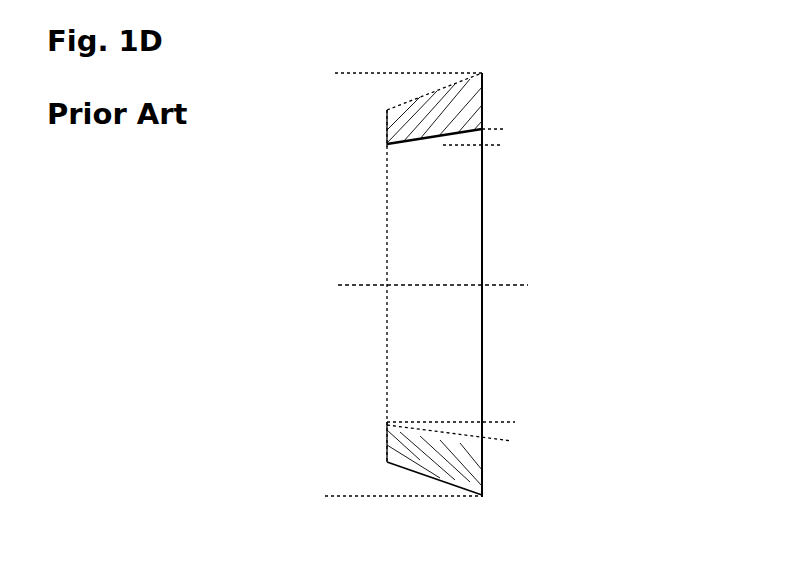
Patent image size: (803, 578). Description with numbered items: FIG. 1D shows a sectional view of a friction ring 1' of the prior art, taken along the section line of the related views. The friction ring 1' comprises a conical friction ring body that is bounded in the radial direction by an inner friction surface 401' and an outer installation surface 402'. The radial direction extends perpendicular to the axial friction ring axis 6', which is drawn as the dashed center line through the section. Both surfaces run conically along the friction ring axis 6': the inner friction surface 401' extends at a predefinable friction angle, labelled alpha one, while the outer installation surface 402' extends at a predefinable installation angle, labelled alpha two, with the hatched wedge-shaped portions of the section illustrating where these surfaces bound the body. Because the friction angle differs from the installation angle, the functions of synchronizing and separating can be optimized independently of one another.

The friction ring 1' is at (542, 277).
The outer installation surface 402' is at (424, 76).
The inner friction surface 401' is at (384, 183).
The friction ring axis 6' is at (458, 256).